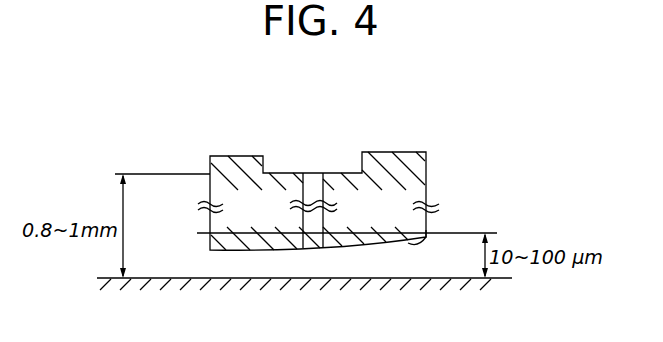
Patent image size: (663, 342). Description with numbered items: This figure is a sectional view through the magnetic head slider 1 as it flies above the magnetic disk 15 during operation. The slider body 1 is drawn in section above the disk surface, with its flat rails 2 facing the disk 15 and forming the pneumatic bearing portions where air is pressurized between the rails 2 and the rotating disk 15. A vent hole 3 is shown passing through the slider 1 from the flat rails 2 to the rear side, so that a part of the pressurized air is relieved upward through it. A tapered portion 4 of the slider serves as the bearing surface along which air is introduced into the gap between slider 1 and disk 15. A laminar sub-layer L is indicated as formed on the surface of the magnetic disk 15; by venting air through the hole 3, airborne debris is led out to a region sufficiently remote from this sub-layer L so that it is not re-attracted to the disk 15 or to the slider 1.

The magnetic head slider 1 is at (400, 147).
The flat rails 2 is at (250, 253).
The vent holes 3 is at (313, 182).
The tapered portions 4 is at (412, 243).
The magnetic disk 15 is at (433, 278).
The laminar sub-layer L is at (404, 262).